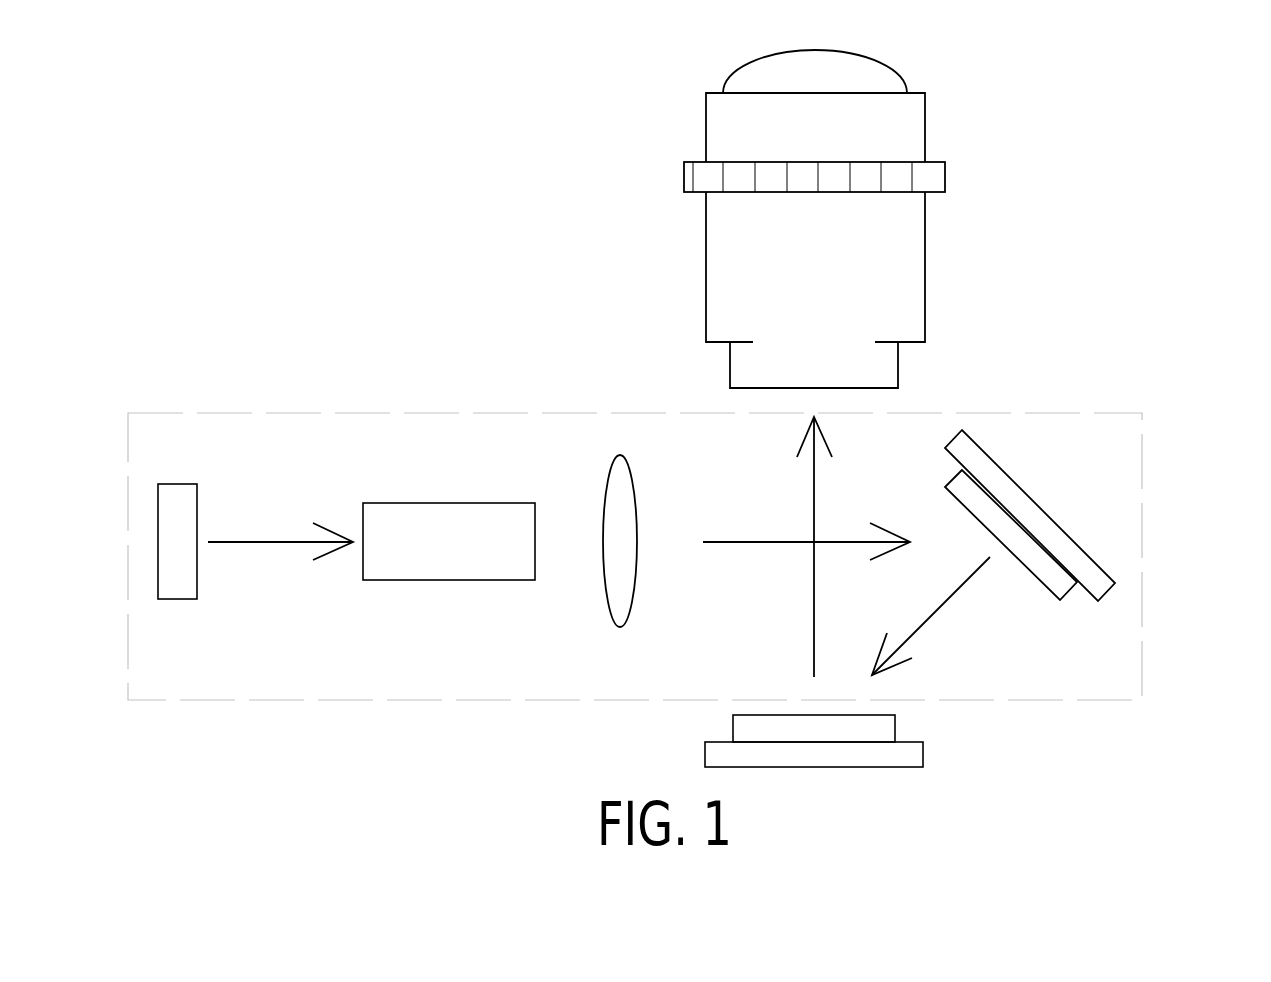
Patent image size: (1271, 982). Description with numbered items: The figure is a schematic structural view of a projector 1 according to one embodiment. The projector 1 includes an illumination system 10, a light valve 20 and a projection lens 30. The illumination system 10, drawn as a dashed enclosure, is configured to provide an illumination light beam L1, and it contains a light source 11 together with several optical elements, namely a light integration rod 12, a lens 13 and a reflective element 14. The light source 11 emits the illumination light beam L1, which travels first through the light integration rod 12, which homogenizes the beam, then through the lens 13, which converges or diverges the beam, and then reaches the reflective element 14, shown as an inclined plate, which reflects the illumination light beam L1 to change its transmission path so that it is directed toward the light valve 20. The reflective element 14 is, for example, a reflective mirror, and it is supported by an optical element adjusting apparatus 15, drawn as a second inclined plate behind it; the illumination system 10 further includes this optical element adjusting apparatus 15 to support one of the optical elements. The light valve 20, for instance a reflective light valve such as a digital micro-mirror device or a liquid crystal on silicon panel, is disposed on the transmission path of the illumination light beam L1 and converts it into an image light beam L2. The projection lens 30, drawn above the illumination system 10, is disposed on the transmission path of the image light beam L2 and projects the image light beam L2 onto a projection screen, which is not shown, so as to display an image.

The projector 1 is at (669, 446).
The illumination system 10 is at (1110, 413).
The light source 11 is at (183, 568).
The light integration rod 12 is at (455, 566).
The lens 13 is at (618, 567).
The reflective element 14 is at (1058, 578).
The optical element adjusting apparatus 15 is at (1083, 573).
The light valve 20 is at (882, 733).
The projection lens 30 is at (877, 263).
The illumination light beam L1 is at (270, 542).
The image light beam L2 is at (814, 492).